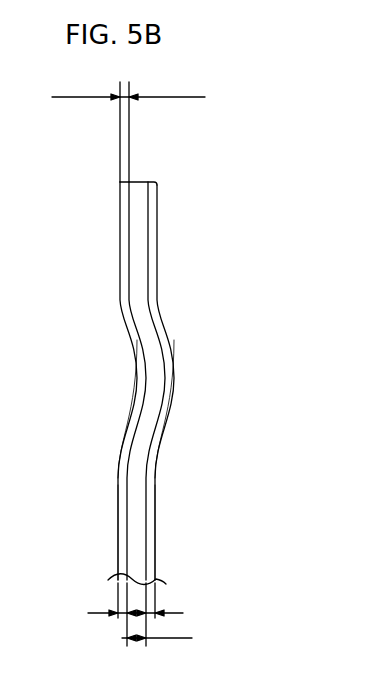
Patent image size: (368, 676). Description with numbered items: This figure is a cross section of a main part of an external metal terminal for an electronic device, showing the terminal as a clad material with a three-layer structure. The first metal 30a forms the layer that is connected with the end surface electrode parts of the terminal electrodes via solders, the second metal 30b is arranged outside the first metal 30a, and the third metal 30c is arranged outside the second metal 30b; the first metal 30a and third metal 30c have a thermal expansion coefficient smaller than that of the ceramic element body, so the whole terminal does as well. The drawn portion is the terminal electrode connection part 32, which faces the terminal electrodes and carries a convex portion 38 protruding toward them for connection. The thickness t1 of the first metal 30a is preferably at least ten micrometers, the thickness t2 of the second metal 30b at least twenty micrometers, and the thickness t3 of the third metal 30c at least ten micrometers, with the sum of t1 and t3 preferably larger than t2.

The first metal 30a is at (158, 225).
The second metal 30b is at (136, 268).
The third metal 30c is at (118, 252).
The convex portion 38 is at (176, 388).
The terminal electrode connection part 32 is at (156, 527).
The thickness of the first metal t1 is at (170, 638).
The thickness of the second metal t2 is at (149, 614).
The thickness of the third metal t3 is at (147, 132).